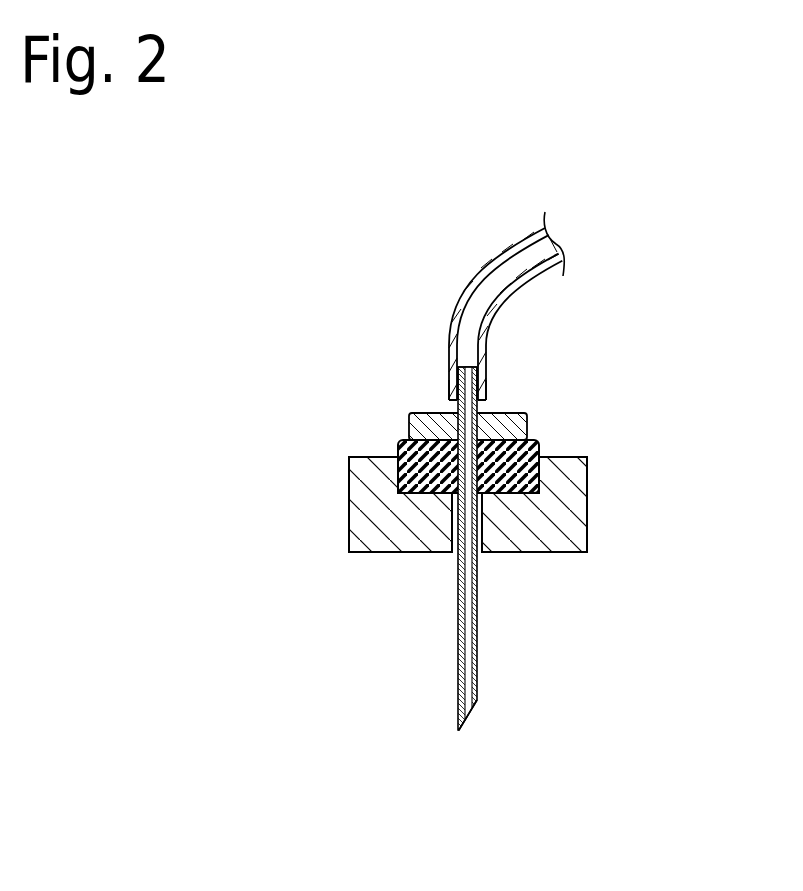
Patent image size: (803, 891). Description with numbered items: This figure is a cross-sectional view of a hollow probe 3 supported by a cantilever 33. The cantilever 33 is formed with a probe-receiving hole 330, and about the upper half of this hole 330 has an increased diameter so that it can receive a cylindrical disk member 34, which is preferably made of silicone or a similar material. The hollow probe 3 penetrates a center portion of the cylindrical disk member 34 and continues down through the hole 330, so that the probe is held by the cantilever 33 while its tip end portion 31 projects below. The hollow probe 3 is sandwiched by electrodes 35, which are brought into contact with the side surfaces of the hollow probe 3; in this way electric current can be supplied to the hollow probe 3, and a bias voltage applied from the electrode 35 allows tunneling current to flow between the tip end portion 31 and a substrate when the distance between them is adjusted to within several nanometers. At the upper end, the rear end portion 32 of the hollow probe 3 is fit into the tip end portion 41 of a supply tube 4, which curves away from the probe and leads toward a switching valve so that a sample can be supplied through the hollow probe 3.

The hollow probe 3 is at (481, 612).
The tip end portion 31 is at (459, 731).
The rear end portion 32 is at (479, 371).
The cantilever 33 is at (587, 490).
The probe-receiving hole 330 is at (457, 555).
The cylindrical disk member 34 is at (402, 455).
The electrode 35 is at (526, 423).
The supply tube 4 is at (457, 305).
The tip end portion 41 is at (451, 393).